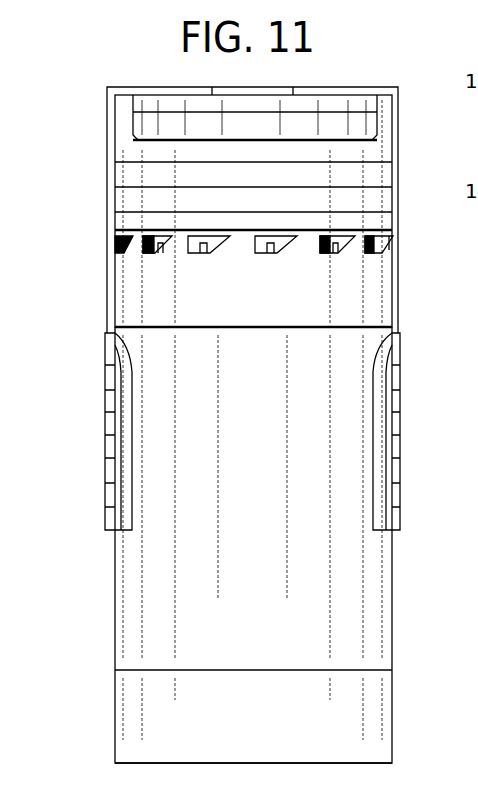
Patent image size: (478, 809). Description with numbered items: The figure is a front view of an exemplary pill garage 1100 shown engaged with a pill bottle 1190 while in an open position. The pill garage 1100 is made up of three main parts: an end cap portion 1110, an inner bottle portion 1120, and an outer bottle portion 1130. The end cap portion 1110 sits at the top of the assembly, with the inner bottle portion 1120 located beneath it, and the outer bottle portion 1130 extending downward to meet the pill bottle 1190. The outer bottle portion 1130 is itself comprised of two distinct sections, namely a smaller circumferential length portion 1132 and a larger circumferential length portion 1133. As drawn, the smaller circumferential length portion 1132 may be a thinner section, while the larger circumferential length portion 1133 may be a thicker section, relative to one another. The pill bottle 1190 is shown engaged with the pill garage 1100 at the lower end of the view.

The pill garage 1100 is at (427, 71).
The end cap portion 1110 is at (111, 90).
The inner bottle portion 1120 is at (134, 124).
The outer bottle portion 1130 is at (398, 530).
The smaller circumferential length portion 1132 is at (111, 283).
The larger circumferential length portion 1133 is at (125, 470).
The pill bottle 1190 is at (392, 763).